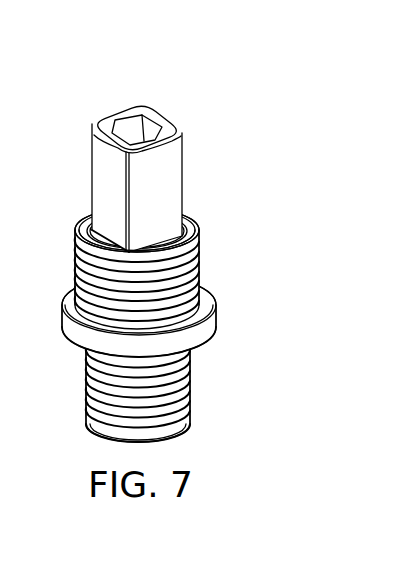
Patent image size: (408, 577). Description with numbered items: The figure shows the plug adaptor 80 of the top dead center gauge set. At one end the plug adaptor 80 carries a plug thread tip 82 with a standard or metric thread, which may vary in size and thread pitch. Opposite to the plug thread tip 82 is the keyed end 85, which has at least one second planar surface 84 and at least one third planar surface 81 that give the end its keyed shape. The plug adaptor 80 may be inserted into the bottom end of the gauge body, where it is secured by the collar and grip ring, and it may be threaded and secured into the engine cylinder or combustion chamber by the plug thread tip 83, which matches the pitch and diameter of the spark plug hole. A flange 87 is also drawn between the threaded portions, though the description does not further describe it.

The plug adaptor 80 is at (236, 60).
The third planar surface 81 is at (150, 120).
The plug thread tip 82 is at (198, 250).
The plug thread tip 83 is at (188, 380).
The second planar surface 84 is at (125, 156).
The keyed end 85 is at (102, 115).
The flange 87 is at (62, 333).